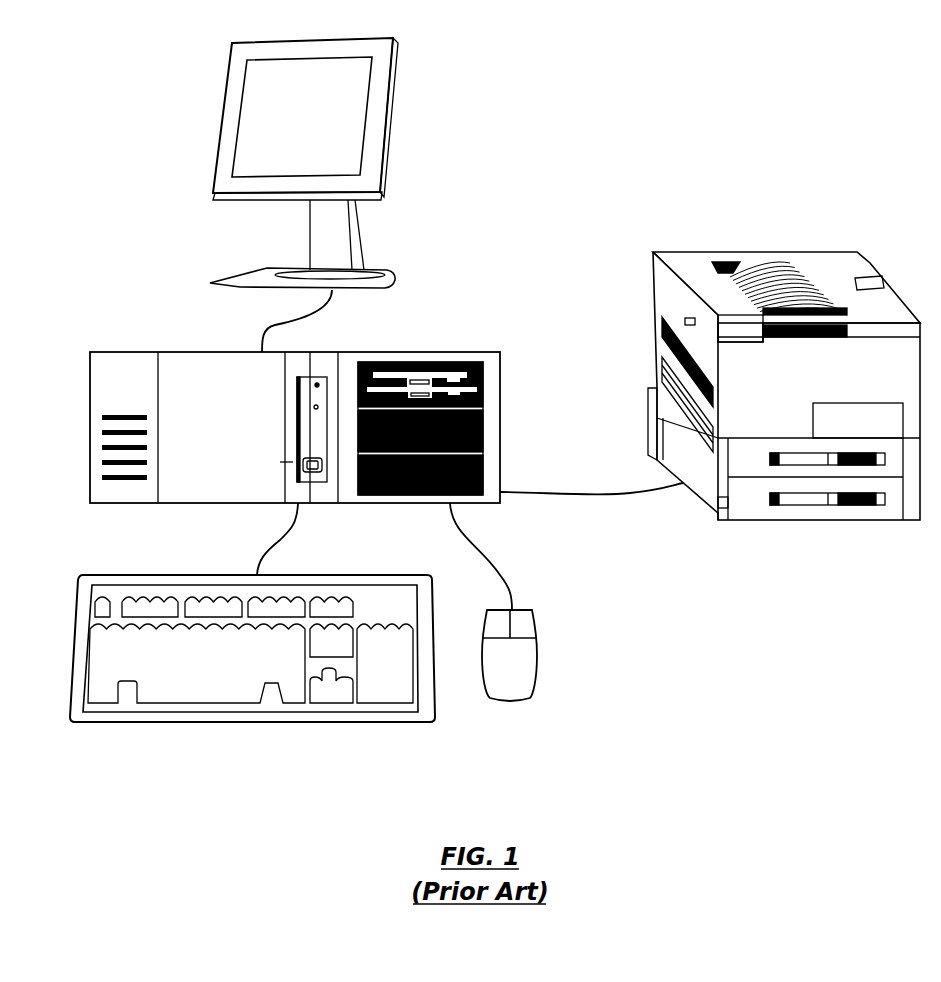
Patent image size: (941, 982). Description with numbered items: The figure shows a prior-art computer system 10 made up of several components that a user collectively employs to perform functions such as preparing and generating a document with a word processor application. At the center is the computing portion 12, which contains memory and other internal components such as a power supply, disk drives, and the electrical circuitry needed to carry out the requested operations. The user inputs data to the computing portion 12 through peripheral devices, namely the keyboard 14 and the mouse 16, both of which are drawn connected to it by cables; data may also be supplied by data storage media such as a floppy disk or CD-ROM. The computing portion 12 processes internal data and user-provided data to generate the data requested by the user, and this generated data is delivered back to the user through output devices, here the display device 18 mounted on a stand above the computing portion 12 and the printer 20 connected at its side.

The computer system 10 is at (650, 104).
The computing portion 12 is at (458, 353).
The keyboard 14 is at (78, 610).
The mouse 16 is at (537, 657).
The display device 18 is at (392, 120).
The printer 20 is at (797, 250).